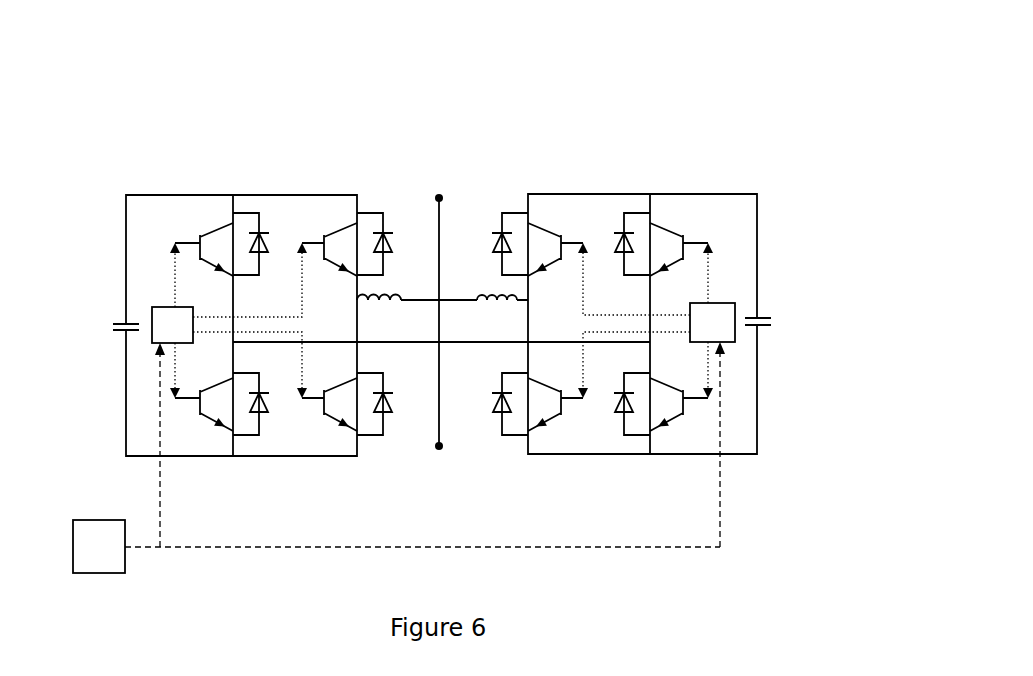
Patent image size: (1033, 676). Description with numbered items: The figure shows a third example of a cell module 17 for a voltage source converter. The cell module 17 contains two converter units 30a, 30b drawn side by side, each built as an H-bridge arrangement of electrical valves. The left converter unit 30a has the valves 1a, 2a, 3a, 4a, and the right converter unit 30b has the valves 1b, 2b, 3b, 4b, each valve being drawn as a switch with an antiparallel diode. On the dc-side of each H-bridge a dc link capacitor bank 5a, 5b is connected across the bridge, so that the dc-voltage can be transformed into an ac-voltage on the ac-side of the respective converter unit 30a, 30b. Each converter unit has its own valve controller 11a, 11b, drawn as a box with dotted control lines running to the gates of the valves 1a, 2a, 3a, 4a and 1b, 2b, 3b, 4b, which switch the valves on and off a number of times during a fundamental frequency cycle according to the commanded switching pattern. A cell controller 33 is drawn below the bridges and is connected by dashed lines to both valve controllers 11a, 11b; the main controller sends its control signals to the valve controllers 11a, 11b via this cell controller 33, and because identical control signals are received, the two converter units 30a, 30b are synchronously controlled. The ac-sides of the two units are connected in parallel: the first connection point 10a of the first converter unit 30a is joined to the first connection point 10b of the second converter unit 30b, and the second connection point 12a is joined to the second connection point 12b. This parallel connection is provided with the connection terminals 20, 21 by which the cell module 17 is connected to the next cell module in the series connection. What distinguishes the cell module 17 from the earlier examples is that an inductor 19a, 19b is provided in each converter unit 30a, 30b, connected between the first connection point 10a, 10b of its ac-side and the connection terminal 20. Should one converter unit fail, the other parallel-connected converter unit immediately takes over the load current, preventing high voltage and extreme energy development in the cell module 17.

The electrical valve 1a is at (227, 243).
The electrical valve 2a is at (365, 242).
The electrical valve 3a is at (243, 428).
The electrical valve 4a is at (365, 420).
The electrical valve 1b is at (515, 233).
The electrical valve 2b is at (640, 233).
The electrical valve 3b is at (523, 420).
The electrical valve 4b is at (638, 425).
The dc link capacitor bank 5a is at (122, 324).
The dc link capacitor bank 5b is at (770, 318).
The first connection point 10a is at (363, 304).
The first connection point 10b is at (510, 304).
The valve controller 11a is at (170, 305).
The valve controller 11b is at (713, 303).
The second connection point 12a is at (233, 340).
The second connection point 12b is at (650, 340).
The cell module 17 is at (550, 135).
The inductor 19a is at (402, 292).
The inductor 19b is at (487, 292).
The connection terminal 20 is at (438, 193).
The connection terminal 21 is at (448, 457).
The converter unit 30a is at (257, 183).
The converter unit 30b is at (665, 183).
The cell controller 33 is at (105, 518).